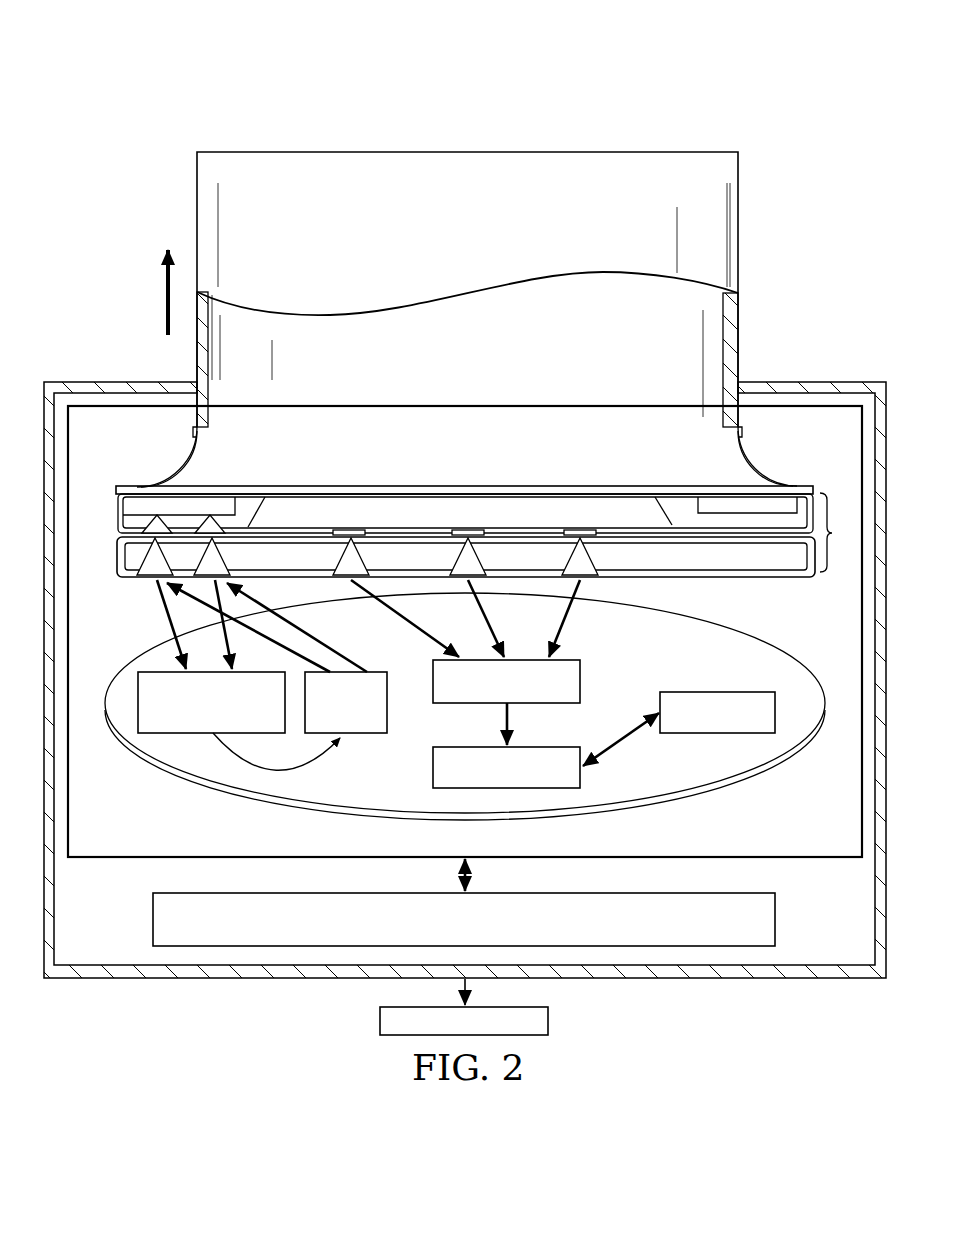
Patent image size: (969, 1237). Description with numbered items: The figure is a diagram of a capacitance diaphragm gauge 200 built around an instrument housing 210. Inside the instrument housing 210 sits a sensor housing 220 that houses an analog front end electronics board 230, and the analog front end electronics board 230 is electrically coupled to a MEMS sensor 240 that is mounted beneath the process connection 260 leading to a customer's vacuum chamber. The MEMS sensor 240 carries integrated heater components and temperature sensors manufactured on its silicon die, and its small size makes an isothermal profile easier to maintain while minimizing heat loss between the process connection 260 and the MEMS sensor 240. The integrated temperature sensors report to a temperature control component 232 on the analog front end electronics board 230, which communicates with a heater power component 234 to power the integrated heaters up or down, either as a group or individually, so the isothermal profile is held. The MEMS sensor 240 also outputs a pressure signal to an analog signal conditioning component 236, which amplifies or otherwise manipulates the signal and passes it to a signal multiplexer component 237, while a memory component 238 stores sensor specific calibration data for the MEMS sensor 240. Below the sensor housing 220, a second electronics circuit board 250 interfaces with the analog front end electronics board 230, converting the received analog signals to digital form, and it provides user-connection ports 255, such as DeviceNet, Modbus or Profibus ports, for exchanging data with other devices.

The capacitance diaphragm gauge 200 is at (248, 71).
The instrument housing 210 is at (115, 382).
The sensor housing 220 is at (110, 858).
The analog front end electronics board 230 is at (745, 628).
The temperature control component 232 is at (160, 733).
The heater power component 234 is at (372, 672).
The analog signal conditioning component 236 is at (583, 681).
The signal multiplexer component 237 is at (431, 770).
The memory component 238 is at (722, 692).
The MEMS sensor 240 is at (832, 533).
The second electronics circuit board 250 is at (777, 920).
The user-connection ports 255 is at (550, 1022).
The process connection 260 is at (740, 258).